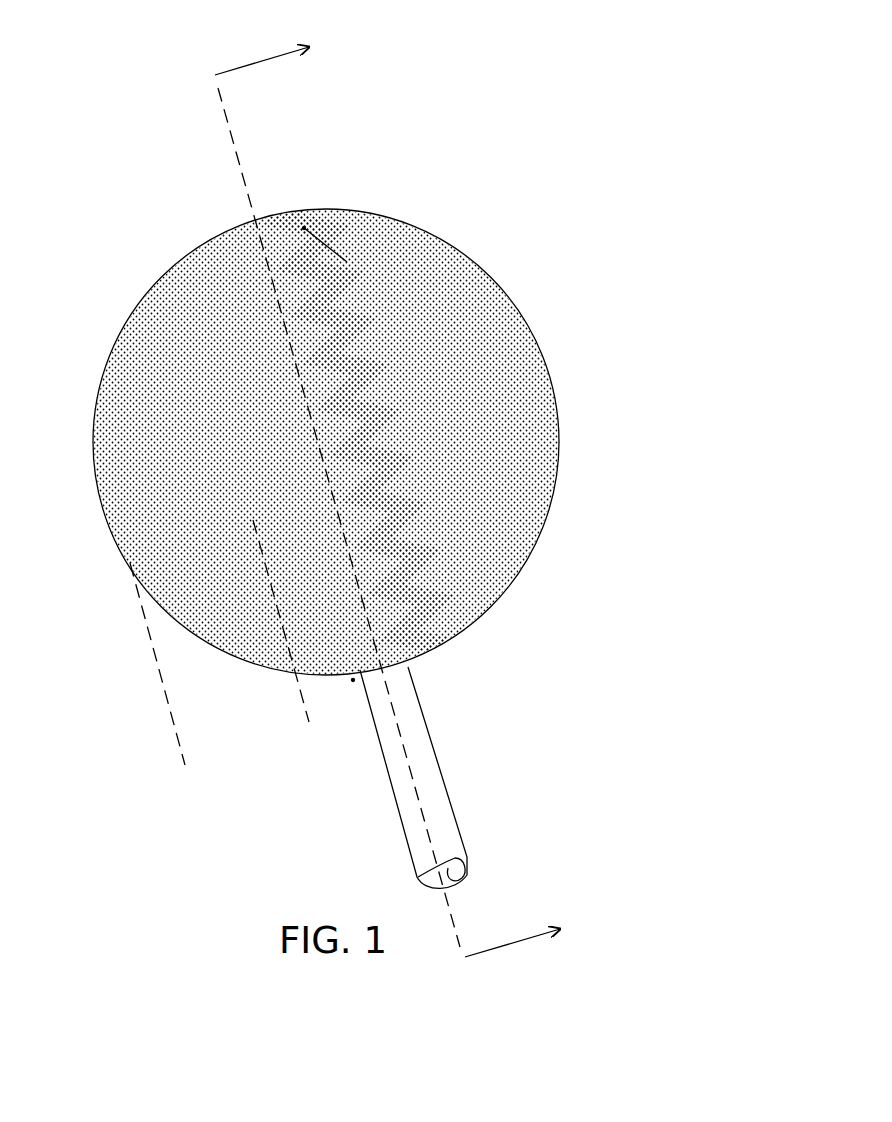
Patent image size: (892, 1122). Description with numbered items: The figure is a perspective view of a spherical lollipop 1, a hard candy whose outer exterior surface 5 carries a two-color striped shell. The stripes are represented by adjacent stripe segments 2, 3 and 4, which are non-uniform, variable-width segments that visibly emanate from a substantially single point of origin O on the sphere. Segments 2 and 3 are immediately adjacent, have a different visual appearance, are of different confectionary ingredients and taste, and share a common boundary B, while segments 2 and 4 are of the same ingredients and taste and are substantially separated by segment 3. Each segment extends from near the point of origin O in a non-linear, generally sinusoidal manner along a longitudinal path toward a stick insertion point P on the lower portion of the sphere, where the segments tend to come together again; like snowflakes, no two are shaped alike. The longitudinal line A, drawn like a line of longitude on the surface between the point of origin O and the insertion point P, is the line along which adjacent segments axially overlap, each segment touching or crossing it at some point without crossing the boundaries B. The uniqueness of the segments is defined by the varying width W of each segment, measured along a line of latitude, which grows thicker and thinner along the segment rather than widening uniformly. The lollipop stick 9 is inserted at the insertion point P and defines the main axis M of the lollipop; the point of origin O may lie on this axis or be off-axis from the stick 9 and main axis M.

The spherical lollipop 1 is at (508, 135).
The stripe segment 2 is at (365, 375).
The stripe segment 3 is at (477, 460).
The stripe segment 4 is at (517, 498).
The outer exterior surface 5 is at (124, 425).
The lollipop stick 9 is at (433, 763).
The point of origin O is at (305, 228).
The main axis M is at (247, 174).
The longitudinal line A is at (347, 262).
The boundary B is at (365, 412).
The stick insertion point P is at (353, 688).
The width W is at (300, 694).